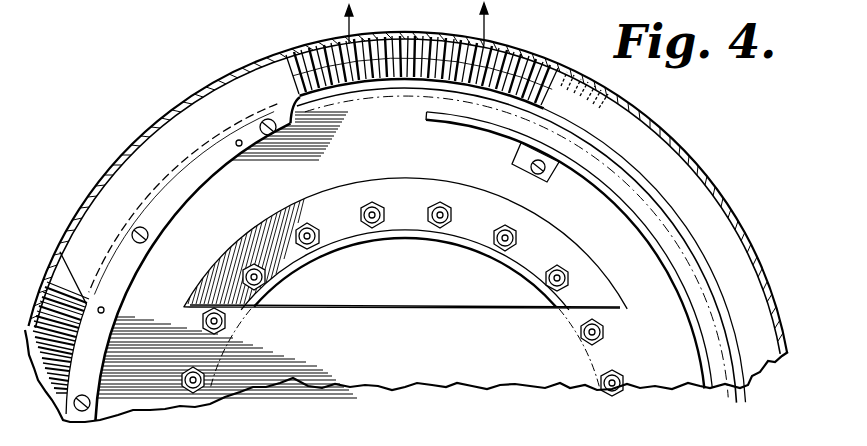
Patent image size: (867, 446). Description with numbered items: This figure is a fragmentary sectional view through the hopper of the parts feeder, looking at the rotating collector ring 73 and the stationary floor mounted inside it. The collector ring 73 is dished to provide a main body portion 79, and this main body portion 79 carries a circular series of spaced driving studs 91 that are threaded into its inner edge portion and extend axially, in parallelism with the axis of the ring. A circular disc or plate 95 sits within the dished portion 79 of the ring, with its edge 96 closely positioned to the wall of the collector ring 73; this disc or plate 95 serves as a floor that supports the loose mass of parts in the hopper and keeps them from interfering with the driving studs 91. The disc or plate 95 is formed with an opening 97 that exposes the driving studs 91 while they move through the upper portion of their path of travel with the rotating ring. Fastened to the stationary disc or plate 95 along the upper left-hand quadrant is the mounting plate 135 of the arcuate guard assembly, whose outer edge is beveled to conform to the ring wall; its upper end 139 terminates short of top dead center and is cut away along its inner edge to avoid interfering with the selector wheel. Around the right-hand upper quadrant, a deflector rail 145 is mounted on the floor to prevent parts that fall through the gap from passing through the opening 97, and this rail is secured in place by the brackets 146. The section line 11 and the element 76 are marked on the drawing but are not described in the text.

The section line 11 is at (410, 23).
The collector ring 73 is at (520, 52).
The housing rim 76 is at (645, 115).
The main body portion 79 is at (394, 180).
The driving studs 91 is at (449, 213).
The disc or plate 95 is at (612, 178).
The edge 96 is at (678, 232).
The opening 97 is at (442, 303).
The mounting plate 135 is at (124, 277).
The upper end 139 is at (363, 90).
The deflector rail 145 is at (672, 278).
The brackets 146 is at (545, 186).